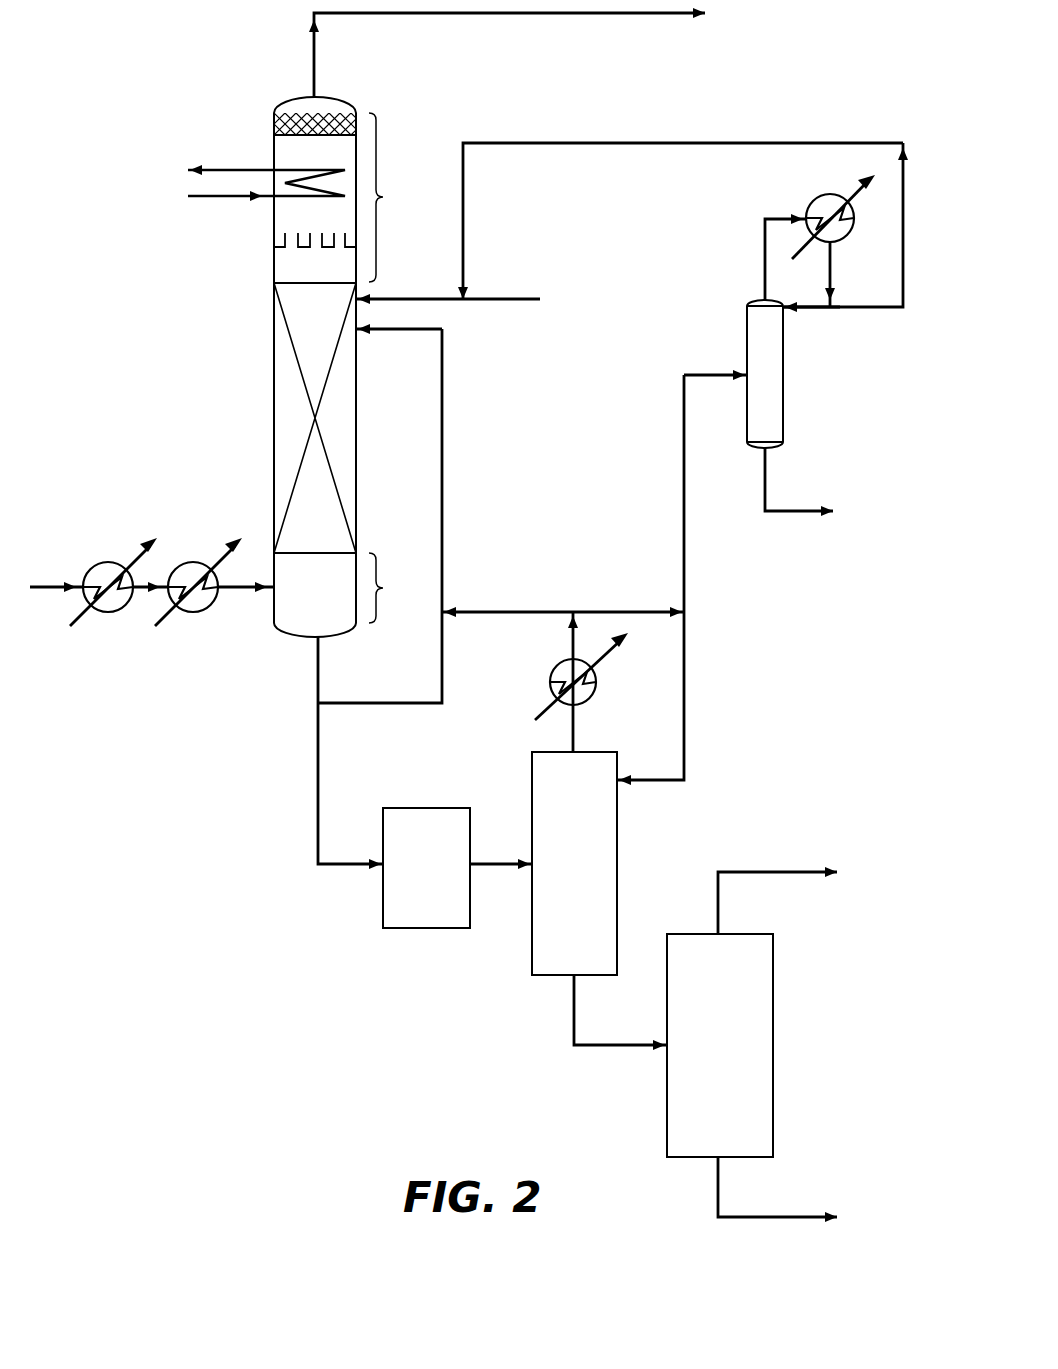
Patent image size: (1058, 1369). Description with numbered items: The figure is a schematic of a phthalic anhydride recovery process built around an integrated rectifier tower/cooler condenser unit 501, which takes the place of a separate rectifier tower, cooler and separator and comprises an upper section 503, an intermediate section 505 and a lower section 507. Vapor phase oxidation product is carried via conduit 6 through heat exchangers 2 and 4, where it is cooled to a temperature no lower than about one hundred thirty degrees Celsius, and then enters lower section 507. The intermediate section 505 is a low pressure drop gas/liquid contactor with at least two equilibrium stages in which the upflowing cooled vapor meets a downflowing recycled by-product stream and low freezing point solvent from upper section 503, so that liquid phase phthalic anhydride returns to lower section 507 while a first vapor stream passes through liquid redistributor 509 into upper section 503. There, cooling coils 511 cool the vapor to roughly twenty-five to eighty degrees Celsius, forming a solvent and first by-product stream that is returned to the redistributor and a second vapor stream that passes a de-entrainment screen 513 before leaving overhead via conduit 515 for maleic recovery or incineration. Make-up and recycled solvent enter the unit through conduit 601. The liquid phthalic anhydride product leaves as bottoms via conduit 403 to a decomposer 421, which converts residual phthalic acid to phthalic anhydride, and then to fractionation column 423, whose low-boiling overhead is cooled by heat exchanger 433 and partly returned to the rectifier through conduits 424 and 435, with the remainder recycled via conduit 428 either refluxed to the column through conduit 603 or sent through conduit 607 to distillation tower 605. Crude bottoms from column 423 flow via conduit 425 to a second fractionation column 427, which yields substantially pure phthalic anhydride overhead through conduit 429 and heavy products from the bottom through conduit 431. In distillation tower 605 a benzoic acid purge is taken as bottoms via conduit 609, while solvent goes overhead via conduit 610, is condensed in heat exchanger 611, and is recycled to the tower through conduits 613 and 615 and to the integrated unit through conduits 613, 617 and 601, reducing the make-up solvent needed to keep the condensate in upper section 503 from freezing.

The heat exchanger 2 is at (104, 562).
The heat exchanger 4 is at (189, 562).
The conduit 6 is at (43, 585).
The conduit 403 is at (318, 668).
The decomposer 421 is at (420, 808).
The fractionation column 423 is at (590, 750).
The conduit 424 is at (540, 610).
The conduit 425 is at (574, 1019).
The second fractionation column 427 is at (693, 934).
The conduit 428 is at (615, 610).
The conduit 429 is at (765, 870).
The conduit 431 is at (778, 1220).
The heat exchanger 433 is at (597, 679).
The conduit 435 is at (444, 401).
The integrated rectifier tower/cooler condenser unit 501 is at (273, 372).
The upper section 503 is at (400, 197).
The intermediate section 505 is at (334, 318).
The lower section 507 is at (400, 588).
The liquid redistributor 509 is at (280, 247).
The cooling coils 511 is at (238, 200).
The de-entrainment screen 513 is at (274, 118).
The conduit 515 is at (460, 13).
The conduit 601 is at (512, 297).
The conduit 603 is at (686, 666).
The distillation tower 605 is at (746, 324).
The conduit 607 is at (683, 429).
The conduit 609 is at (767, 479).
The conduit 610 is at (763, 264).
The heat exchanger 611 is at (830, 194).
The conduit 613 is at (832, 282).
The conduit 615 is at (815, 309).
The conduit 617 is at (884, 309).